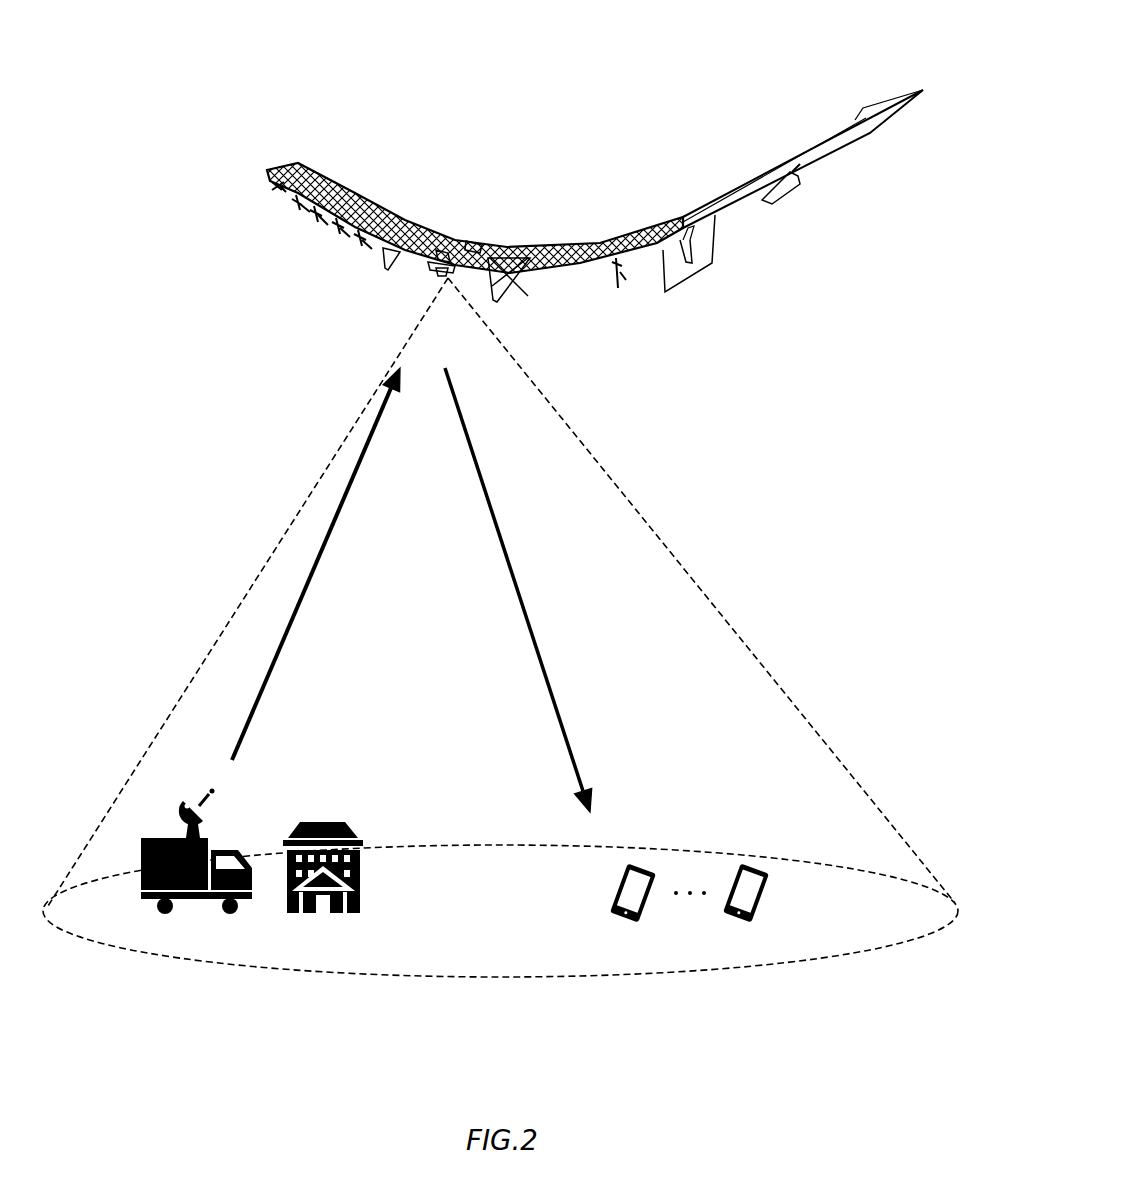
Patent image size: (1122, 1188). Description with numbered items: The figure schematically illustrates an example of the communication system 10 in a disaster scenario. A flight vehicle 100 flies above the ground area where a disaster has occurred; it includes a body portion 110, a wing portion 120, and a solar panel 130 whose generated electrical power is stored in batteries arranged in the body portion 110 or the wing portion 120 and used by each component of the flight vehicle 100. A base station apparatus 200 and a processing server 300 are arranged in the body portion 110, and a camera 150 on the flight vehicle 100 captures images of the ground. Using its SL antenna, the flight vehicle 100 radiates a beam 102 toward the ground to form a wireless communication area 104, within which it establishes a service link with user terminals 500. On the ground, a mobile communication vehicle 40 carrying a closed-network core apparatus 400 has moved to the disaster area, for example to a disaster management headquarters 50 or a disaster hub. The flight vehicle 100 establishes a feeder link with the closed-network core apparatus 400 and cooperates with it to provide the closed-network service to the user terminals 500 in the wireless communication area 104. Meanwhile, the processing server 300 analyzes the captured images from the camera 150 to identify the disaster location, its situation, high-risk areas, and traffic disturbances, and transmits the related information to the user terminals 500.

The communication system 10 is at (140, 58).
The flight vehicle 100 is at (307, 106).
The body portion 110 is at (440, 266).
The wing portion 120 is at (292, 167).
The solar panel 130 is at (342, 166).
The camera 150 is at (445, 274).
The base station apparatus 200 is at (443, 258).
The processing server 300 is at (474, 243).
The beam 102 is at (276, 548).
The wireless communication area 104 is at (488, 980).
The closed-network core apparatus 400 is at (184, 797).
The mobile communication vehicle 40 is at (193, 902).
The disaster management headquarters 50 is at (341, 914).
The user terminals 500 is at (618, 918).